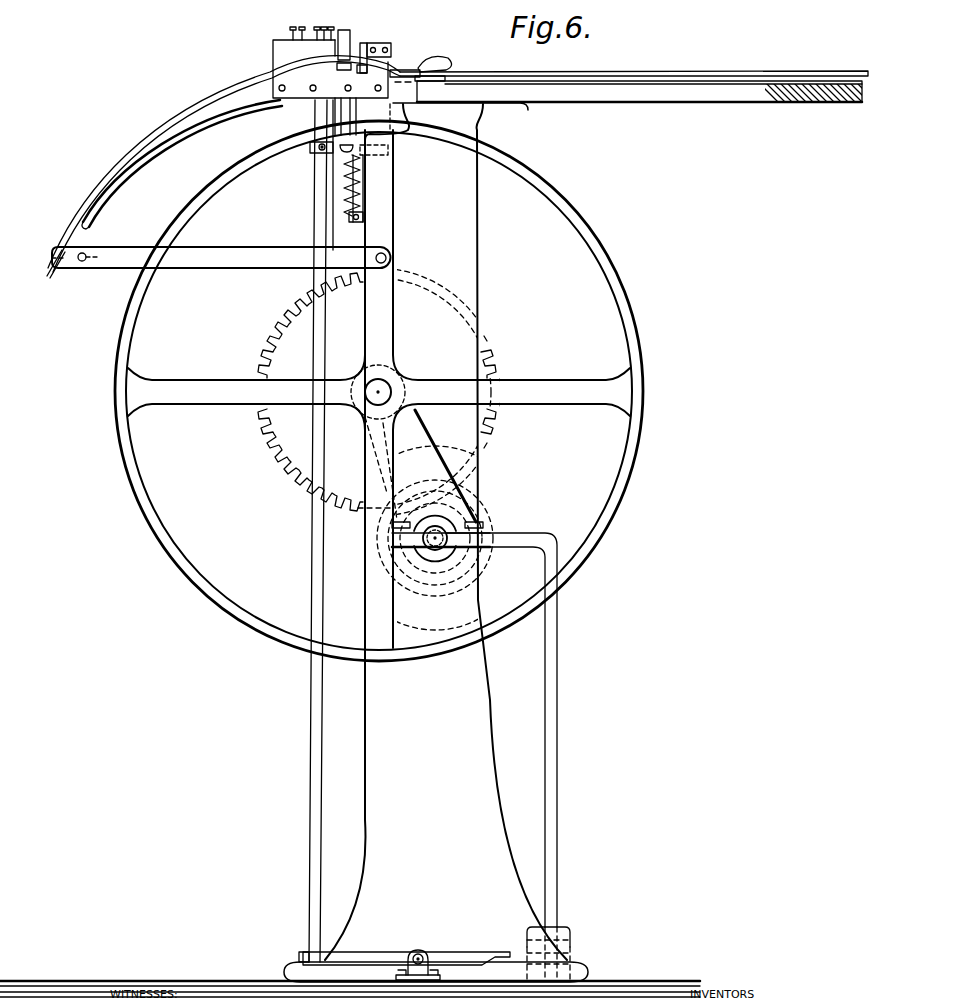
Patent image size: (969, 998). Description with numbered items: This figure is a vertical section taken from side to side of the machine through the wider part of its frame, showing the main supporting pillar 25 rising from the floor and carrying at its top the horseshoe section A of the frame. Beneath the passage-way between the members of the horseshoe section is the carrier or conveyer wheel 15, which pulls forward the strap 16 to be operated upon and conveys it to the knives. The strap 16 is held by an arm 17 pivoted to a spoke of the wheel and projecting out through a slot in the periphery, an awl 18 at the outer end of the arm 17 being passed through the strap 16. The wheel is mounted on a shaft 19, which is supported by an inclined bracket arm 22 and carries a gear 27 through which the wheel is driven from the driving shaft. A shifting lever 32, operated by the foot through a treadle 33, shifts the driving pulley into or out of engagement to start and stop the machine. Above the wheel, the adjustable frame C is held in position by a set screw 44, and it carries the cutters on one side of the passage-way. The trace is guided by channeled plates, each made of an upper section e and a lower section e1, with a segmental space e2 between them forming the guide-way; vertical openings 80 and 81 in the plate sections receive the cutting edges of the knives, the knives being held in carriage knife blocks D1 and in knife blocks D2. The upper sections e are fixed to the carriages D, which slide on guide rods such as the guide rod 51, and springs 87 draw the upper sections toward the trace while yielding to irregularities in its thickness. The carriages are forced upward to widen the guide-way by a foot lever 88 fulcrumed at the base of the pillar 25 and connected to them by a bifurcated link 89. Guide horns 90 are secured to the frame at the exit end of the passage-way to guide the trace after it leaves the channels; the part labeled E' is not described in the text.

The horseshoe section A is at (689, 98).
The strap 16 is at (662, 78).
The guide horns 90 is at (182, 159).
The carrier or conveyer wheel 15 is at (602, 258).
The shaft 19 is at (378, 392).
The pillar 25 is at (350, 550).
The gear 27 is at (503, 363).
The bracket arm 22 is at (429, 503).
The shifting lever 32 is at (560, 796).
The treadle 33 is at (572, 958).
The foot lever 88 is at (455, 958).
The bifurcated link 89 is at (310, 768).
The arm 17 is at (248, 256).
The awl 18 is at (58, 256).
The guide rod 51 is at (358, 183).
The springs 87 is at (350, 208).
The block E' is at (330, 69).
The knife blocks D2 is at (282, 38).
The carriage knife blocks D1 is at (345, 30).
The opening 81 is at (363, 45).
The opening 80 is at (385, 44).
The upper section e is at (273, 49).
The space e2 is at (297, 43).
The lower section e1 is at (359, 87).
The carriages D is at (330, 117).
The set screw 44 is at (428, 60).
The shifting or adjustable frame C is at (424, 66).